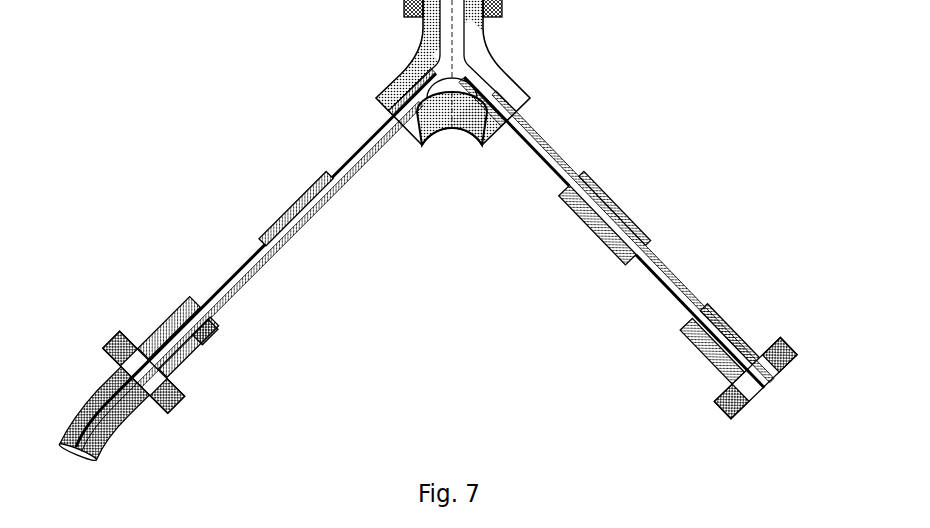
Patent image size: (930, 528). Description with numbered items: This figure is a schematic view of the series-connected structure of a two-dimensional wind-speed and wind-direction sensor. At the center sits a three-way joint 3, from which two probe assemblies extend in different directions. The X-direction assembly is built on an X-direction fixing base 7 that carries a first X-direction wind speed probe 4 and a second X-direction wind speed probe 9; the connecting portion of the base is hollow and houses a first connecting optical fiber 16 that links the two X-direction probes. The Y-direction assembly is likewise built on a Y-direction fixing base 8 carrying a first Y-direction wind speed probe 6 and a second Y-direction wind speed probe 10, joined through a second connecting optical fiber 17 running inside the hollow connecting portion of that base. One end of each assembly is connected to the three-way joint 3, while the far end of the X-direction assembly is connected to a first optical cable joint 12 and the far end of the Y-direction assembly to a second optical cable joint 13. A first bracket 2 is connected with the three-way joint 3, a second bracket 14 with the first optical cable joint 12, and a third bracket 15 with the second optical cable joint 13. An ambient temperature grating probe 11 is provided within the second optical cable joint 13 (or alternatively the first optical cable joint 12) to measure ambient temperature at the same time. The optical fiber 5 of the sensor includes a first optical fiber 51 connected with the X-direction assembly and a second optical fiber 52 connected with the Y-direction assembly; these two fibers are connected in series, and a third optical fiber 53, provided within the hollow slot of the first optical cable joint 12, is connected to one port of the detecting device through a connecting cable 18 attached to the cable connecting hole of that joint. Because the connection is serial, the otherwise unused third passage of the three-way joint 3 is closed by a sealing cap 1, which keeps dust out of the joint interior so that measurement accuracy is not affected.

The sealing cap 1 is at (403, 15).
The first bracket 2 is at (500, 10).
The three-way joint 3 is at (488, 40).
The first X-direction wind speed probe 4 is at (382, 134).
The optical fiber 5 is at (447, 130).
The first Y-direction wind speed probe 6 is at (570, 162).
The X-direction fixing base 7 is at (307, 233).
The Y-direction fixing base 8 is at (612, 252).
The second X-direction wind speed probe 9 is at (248, 275).
The second Y-direction wind speed probe 10 is at (662, 272).
The ambient temperature grating probe 11 is at (743, 323).
The first optical cable joint 12 is at (207, 340).
The second optical cable joint 13 is at (680, 337).
The second bracket 14 is at (177, 390).
The third bracket 15 is at (715, 400).
The first connecting optical fiber 16 is at (280, 222).
The second connecting optical fiber 17 is at (620, 218).
The connecting cable 18 is at (115, 427).
The first optical fiber 51 is at (400, 72).
The second optical fiber 52 is at (530, 90).
The third optical fiber 53 is at (163, 347).